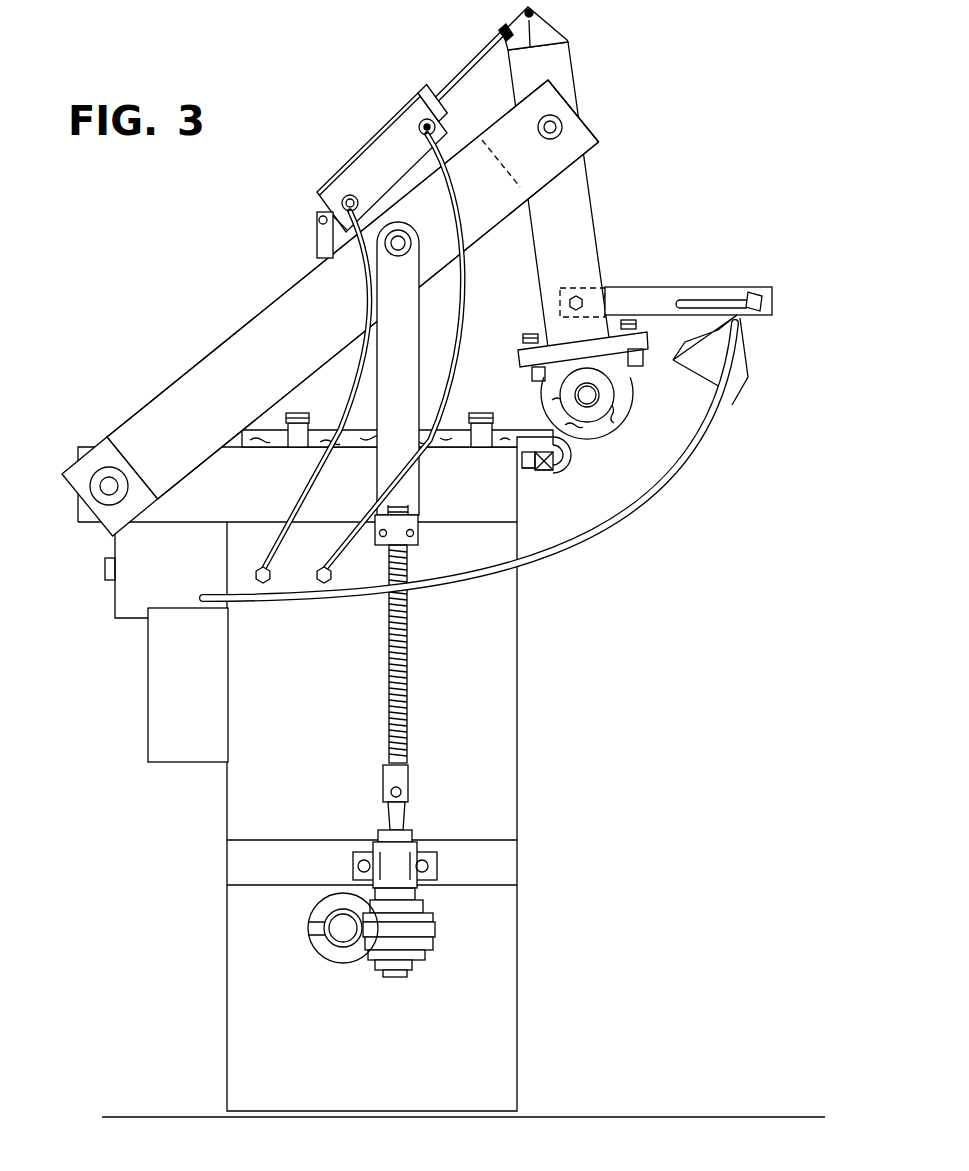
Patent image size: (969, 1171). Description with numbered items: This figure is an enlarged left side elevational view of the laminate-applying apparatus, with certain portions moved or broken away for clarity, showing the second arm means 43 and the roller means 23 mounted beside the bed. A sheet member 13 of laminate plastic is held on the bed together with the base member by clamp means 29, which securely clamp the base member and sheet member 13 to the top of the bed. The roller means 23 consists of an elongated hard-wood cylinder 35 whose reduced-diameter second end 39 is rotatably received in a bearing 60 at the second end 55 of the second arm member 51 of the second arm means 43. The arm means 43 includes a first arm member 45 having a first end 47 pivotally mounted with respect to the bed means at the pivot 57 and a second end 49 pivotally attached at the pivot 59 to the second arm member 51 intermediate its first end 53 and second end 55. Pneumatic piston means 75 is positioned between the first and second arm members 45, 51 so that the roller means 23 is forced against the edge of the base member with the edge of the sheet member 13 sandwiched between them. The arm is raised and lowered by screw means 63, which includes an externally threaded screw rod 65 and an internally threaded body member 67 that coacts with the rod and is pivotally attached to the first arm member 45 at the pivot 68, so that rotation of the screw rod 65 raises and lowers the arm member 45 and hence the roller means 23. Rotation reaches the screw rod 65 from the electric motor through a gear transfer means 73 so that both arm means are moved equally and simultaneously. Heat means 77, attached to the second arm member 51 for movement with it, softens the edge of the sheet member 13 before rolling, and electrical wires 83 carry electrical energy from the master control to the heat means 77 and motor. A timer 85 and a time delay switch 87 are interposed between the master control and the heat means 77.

The sheet member 13 is at (515, 430).
The roller means 23 is at (586, 455).
The clamp means 29 is at (299, 415).
The cylinder 35 is at (637, 397).
The second end of the cylinder 39 is at (610, 427).
The second arm means 43 is at (274, 268).
The first arm member 45 is at (250, 337).
The first end of the first arm member 47 is at (148, 425).
The second end of the first arm member 49 is at (596, 146).
The second arm member 51 is at (584, 240).
The first end of the second arm member 53 is at (560, 62).
The second end of the second arm member 55 is at (566, 328).
The pivot 57 is at (105, 488).
The pivot 59 is at (562, 123).
The bearings 60 is at (598, 393).
The screw means 63 is at (422, 632).
The screw rod 65 is at (410, 690).
The body member 67 is at (420, 540).
The pivot 68 is at (412, 243).
The gear transfer means 73 is at (458, 928).
The pneumatic piston means 75 is at (360, 130).
The heat means 77 is at (763, 377).
The electrical wires 83 is at (683, 478).
The timer 85 is at (142, 592).
The time delay switch 87 is at (175, 707).